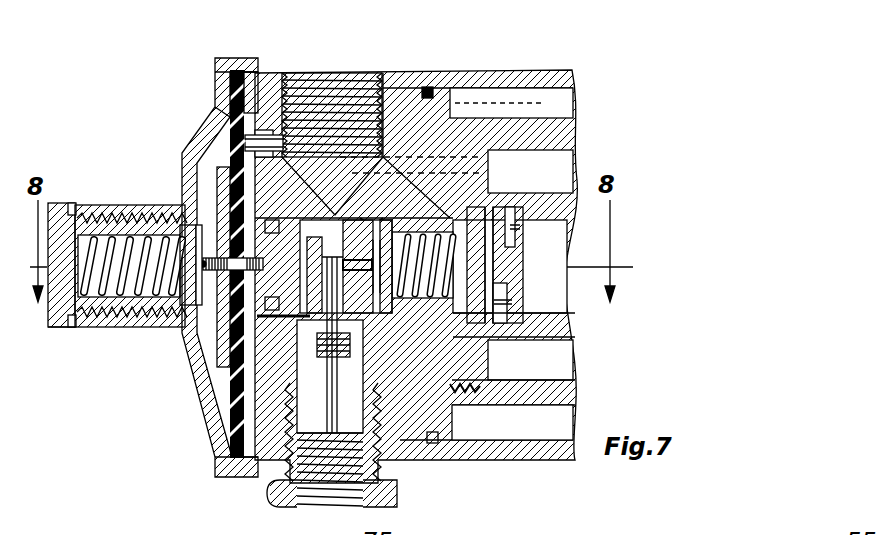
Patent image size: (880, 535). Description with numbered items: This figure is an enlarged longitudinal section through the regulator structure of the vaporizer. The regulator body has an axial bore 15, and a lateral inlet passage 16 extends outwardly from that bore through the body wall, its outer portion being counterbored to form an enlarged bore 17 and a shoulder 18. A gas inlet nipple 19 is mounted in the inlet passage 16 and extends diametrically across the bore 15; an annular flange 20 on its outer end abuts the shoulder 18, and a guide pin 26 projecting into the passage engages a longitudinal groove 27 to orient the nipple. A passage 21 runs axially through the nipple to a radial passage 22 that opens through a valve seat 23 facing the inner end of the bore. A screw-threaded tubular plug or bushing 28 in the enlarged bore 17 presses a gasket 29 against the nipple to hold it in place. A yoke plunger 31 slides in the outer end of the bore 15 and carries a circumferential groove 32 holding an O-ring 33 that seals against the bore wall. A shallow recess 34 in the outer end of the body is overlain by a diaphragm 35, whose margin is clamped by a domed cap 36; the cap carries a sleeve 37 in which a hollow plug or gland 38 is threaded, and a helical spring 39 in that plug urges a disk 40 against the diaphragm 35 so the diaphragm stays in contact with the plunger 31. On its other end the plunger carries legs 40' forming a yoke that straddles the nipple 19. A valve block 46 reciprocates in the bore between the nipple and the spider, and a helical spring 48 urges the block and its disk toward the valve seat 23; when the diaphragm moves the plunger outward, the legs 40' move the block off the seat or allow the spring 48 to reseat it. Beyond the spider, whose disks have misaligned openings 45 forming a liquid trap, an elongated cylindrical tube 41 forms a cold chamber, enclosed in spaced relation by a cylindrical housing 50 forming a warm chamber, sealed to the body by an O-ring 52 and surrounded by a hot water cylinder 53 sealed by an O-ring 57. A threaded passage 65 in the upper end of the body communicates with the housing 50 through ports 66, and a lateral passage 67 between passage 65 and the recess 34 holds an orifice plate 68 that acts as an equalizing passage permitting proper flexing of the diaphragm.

The axial bore 15 is at (322, 218).
The lateral inlet passage 16 is at (226, 385).
The enlarged bore 17 is at (222, 405).
The shoulder 18 is at (372, 345).
The gas inlet nipple 19 is at (342, 245).
The annular flange 20 is at (357, 343).
The axial passage 21 is at (340, 320).
The radial passage 22 is at (370, 216).
The valve seat 23 is at (487, 172).
The guide pin 26 is at (222, 348).
The groove 27 is at (258, 312).
The tubular plug or bushing 28 is at (399, 496).
The gasket 29 is at (390, 380).
The yoke plunger 31 is at (200, 222).
The circumferential groove 32 is at (258, 152).
The O-ring 33 is at (210, 228).
The recess 34 is at (230, 107).
The diaphragm 35 is at (244, 70).
The domed cap 36 is at (215, 63).
The sleeve 37 is at (107, 207).
The hollow plug or gland 38 is at (57, 330).
The helical spring 39 is at (148, 213).
The disk 40 is at (220, 352).
The legs 40' is at (395, 133).
The cylindrical tube 41 is at (567, 321).
The openings 45 is at (487, 303).
The valve block 46 is at (446, 119).
The helical spring 48 is at (506, 326).
The cylindrical housing 50 is at (567, 393).
The O-ring 52 is at (520, 409).
The cylinder 53 is at (566, 72).
The O-ring 57 is at (432, 445).
The screw-threaded passage or port 65 is at (305, 82).
The passages or ports 66 is at (497, 115).
The lateral passage or port 67 is at (282, 102).
The orifice plate 68 is at (252, 122).